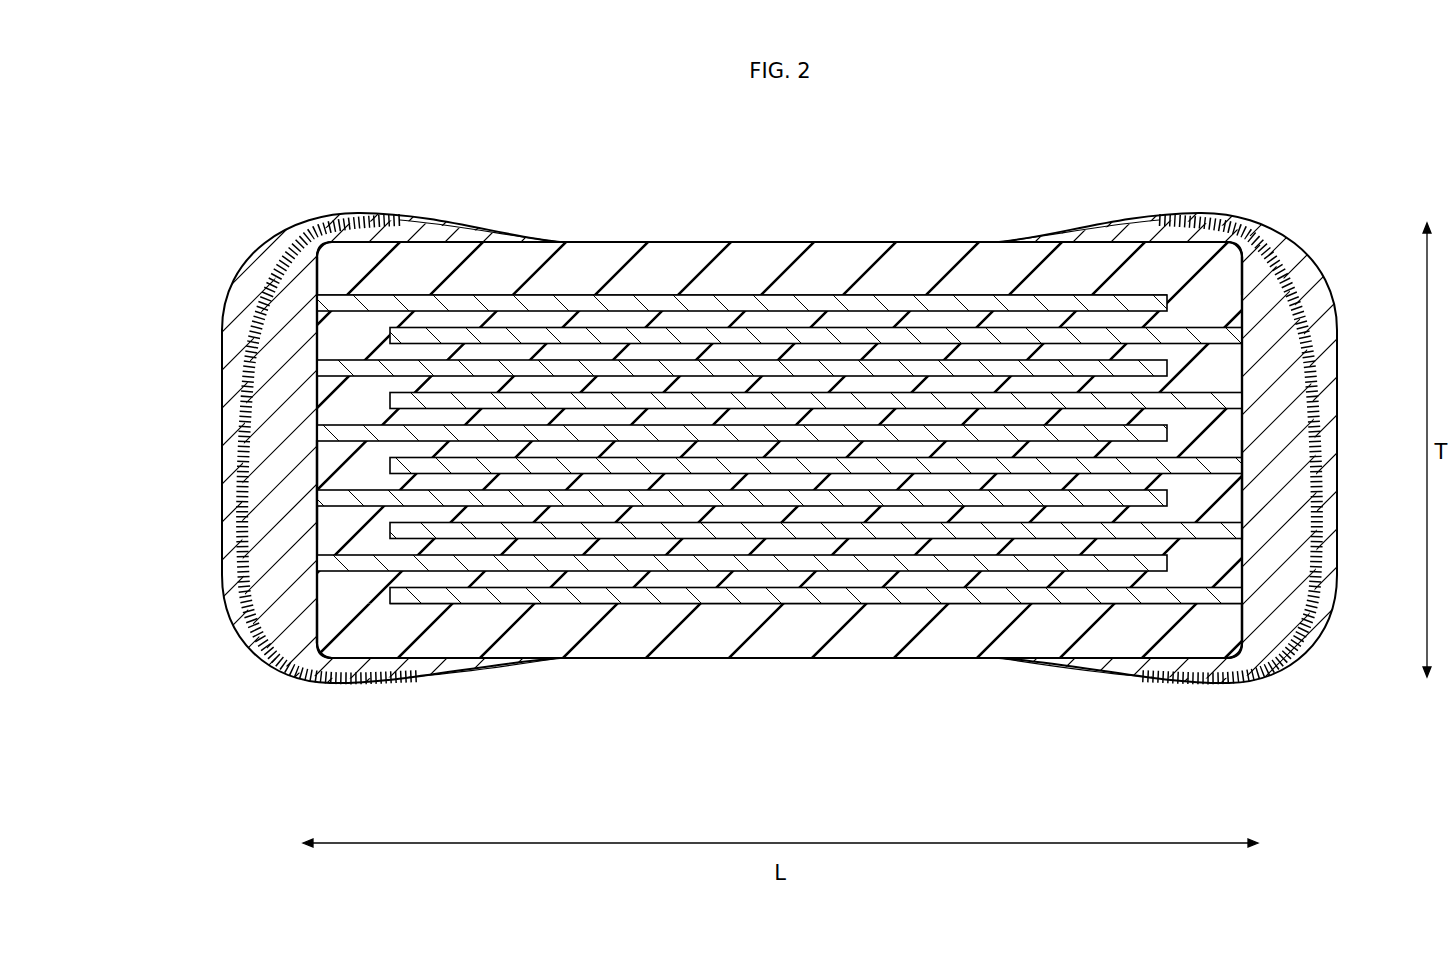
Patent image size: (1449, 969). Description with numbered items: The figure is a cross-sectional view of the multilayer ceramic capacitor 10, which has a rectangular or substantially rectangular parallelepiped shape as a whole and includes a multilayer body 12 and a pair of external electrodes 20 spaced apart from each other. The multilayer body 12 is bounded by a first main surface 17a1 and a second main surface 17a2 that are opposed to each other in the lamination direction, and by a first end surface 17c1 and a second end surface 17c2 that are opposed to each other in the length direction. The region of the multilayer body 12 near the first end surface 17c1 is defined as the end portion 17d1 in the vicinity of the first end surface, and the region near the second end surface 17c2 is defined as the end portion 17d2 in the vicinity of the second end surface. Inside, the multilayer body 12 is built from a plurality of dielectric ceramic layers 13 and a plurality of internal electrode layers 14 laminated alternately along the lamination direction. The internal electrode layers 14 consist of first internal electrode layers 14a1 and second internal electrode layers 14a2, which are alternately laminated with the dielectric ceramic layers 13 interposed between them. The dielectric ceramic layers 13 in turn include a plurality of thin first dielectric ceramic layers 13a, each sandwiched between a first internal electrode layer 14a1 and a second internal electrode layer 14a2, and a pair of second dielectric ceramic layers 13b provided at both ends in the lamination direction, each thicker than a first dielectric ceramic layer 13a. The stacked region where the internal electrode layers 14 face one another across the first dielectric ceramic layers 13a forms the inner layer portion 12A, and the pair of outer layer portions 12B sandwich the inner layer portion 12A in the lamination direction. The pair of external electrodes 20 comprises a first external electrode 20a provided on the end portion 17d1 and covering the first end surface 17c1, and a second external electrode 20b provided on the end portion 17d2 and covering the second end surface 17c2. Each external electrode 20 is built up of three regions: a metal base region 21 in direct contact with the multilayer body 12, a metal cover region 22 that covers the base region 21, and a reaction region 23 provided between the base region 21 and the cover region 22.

The multilayer ceramic capacitor 10 is at (1210, 172).
The multilayer body 12 is at (988, 232).
The inner layer portion 12A is at (626, 285).
The outer layer portion 12B is at (921, 232).
The dielectric ceramic layer 13 is at (887, 160).
The first dielectric ceramic layer 13a is at (770, 580).
The second dielectric ceramic layer 13b is at (860, 270).
The internal electrode layer 14 is at (1106, 132).
The first internal electrode layer 14a1 is at (1232, 400).
The second internal electrode layer 14a2 is at (1128, 372).
The first main surface 17a1 is at (817, 243).
The second main surface 17a2 is at (827, 660).
The first end surface 17c1 is at (1240, 430).
The second end surface 17c2 is at (317, 453).
The end portion in the vicinity of the first end surface 17d1 is at (1236, 487).
The end portion in the vicinity of the second end surface 17d2 is at (317, 478).
The external electrode 20 is at (120, 340).
The first external electrode 20a is at (1292, 723).
The second external electrode 20b is at (158, 322).
The metal base region 21 is at (278, 400).
The metal cover region 22 is at (238, 327).
The reaction region 23 is at (246, 357).